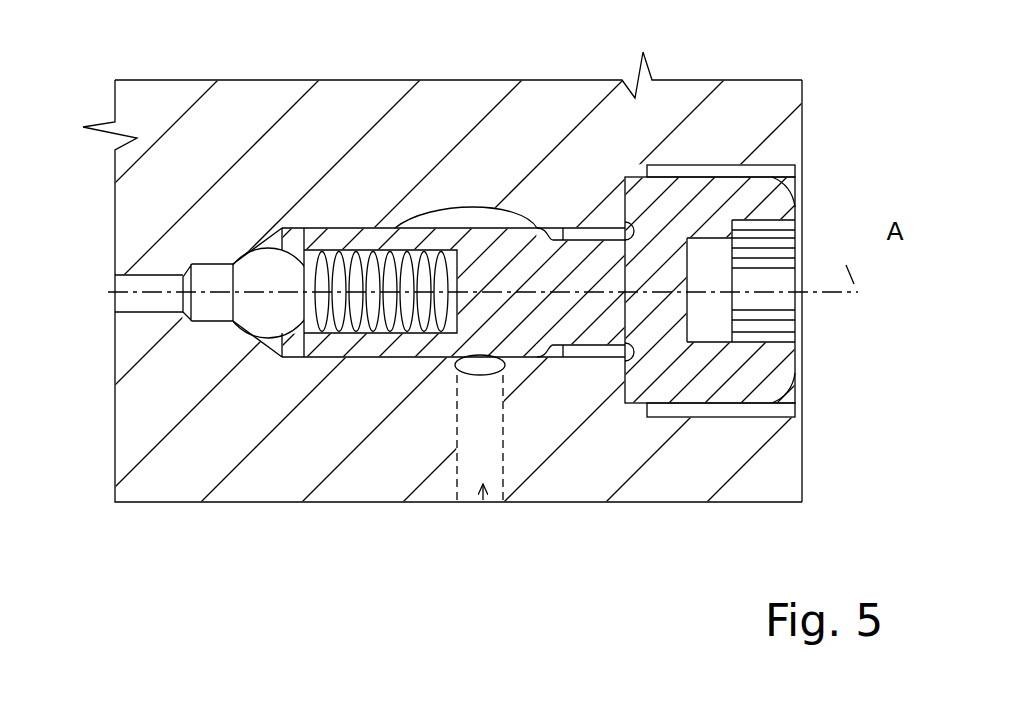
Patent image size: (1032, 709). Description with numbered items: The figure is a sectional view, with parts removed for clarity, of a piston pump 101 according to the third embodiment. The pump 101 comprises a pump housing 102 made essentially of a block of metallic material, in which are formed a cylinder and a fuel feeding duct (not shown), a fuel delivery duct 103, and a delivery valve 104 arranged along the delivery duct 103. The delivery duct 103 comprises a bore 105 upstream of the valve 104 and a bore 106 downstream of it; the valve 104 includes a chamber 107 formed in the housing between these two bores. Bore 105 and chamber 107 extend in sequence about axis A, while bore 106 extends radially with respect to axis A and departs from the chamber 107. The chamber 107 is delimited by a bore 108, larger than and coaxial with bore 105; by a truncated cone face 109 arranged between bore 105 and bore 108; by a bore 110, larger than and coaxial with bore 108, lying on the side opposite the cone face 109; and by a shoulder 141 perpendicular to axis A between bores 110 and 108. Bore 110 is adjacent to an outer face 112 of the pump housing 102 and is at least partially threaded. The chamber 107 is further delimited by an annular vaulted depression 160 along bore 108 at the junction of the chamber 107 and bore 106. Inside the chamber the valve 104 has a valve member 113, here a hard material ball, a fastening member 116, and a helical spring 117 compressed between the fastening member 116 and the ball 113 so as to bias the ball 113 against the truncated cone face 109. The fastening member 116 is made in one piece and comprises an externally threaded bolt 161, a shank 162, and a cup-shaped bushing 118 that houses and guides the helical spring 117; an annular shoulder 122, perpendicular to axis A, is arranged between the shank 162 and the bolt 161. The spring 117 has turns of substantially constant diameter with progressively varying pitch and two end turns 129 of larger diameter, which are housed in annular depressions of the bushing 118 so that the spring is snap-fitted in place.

The pump 101 is at (244, 556).
The pump housing 102 is at (357, 487).
The fuel delivery duct 103 is at (128, 298).
The delivery valve 104 is at (610, 133).
The bore 105 is at (150, 273).
The bore 106 is at (480, 505).
The chamber 107 is at (498, 224).
The bore 108 is at (602, 231).
The truncated cone face 109 is at (241, 263).
The bore 110 is at (800, 200).
The outer face 112 is at (806, 456).
The valve member 113 is at (263, 318).
The fastening member 116 is at (590, 352).
The helical spring 117 is at (377, 237).
The bushing 118 is at (386, 302).
The annular shoulder 122 is at (700, 166).
The end turns 129 is at (538, 226).
The shoulder 141 is at (632, 377).
The annular vaulted depression 160 is at (450, 210).
The bolt 161 is at (768, 363).
The shank 162 is at (565, 357).